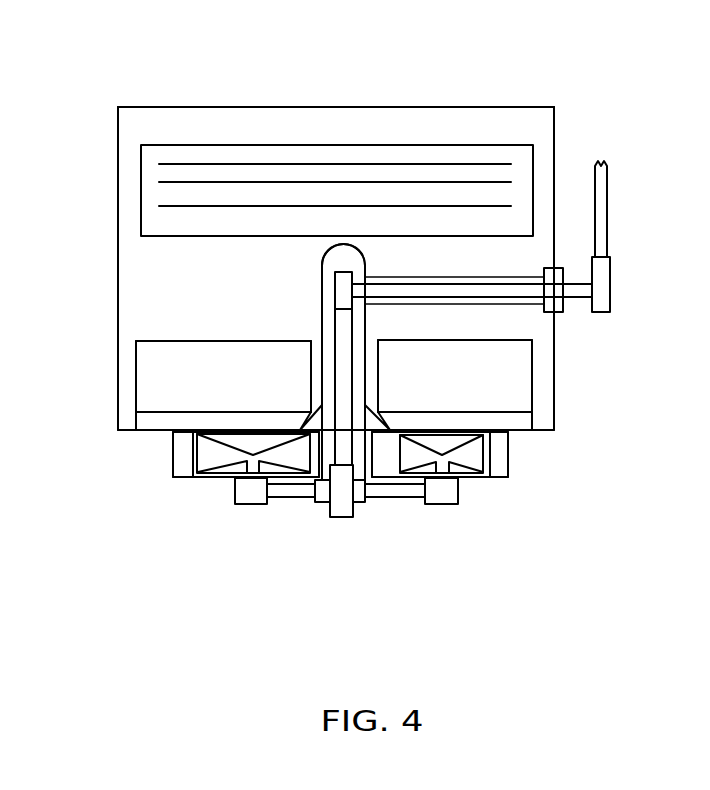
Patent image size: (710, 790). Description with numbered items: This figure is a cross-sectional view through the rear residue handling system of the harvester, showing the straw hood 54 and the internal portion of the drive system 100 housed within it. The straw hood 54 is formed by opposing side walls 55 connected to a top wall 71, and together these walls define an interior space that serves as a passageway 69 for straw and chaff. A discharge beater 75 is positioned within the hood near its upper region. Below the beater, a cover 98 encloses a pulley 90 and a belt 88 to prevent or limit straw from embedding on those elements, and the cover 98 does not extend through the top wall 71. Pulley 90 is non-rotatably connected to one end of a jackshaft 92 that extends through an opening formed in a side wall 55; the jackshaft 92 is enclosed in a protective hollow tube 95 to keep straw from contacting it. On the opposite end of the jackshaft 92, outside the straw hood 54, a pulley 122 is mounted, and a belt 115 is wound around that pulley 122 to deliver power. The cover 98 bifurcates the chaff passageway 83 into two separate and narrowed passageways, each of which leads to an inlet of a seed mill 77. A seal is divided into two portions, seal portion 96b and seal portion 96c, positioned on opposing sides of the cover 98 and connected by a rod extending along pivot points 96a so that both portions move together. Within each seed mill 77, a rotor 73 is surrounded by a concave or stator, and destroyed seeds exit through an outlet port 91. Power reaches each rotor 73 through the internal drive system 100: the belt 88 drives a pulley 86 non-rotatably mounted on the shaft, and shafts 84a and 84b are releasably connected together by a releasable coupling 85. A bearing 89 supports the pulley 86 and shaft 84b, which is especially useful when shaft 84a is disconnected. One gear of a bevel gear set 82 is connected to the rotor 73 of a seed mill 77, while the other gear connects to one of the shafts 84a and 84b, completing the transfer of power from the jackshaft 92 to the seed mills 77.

The straw hood 54 is at (195, 104).
The top wall 71 is at (290, 104).
The discharge beater 75 is at (382, 145).
The side walls 55 is at (118, 146).
The passageway 69 is at (131, 257).
The belt 88 is at (345, 336).
The pulley 90 is at (340, 285).
The cover 98 is at (367, 271).
The protective hollow tube 95 is at (437, 276).
The jackshaft 92 is at (513, 283).
The pulley 122 is at (602, 284).
The belt 115 is at (603, 219).
The seal portion 96b is at (178, 352).
The seal portion 96c is at (513, 393).
The pivot points 96a is at (198, 410).
The chaff passageway 83 is at (132, 333).
The outlet port 91 is at (185, 453).
The seed mills 77 is at (187, 480).
The rotor 73 is at (221, 463).
The bevel gear set 82 is at (253, 493).
The shaft 84a is at (298, 490).
The shaft 84b is at (395, 490).
The releasable coupling 85 is at (323, 503).
The bearing 89 is at (360, 501).
The pulley 86 is at (344, 506).
The internal drive system 100 is at (304, 585).